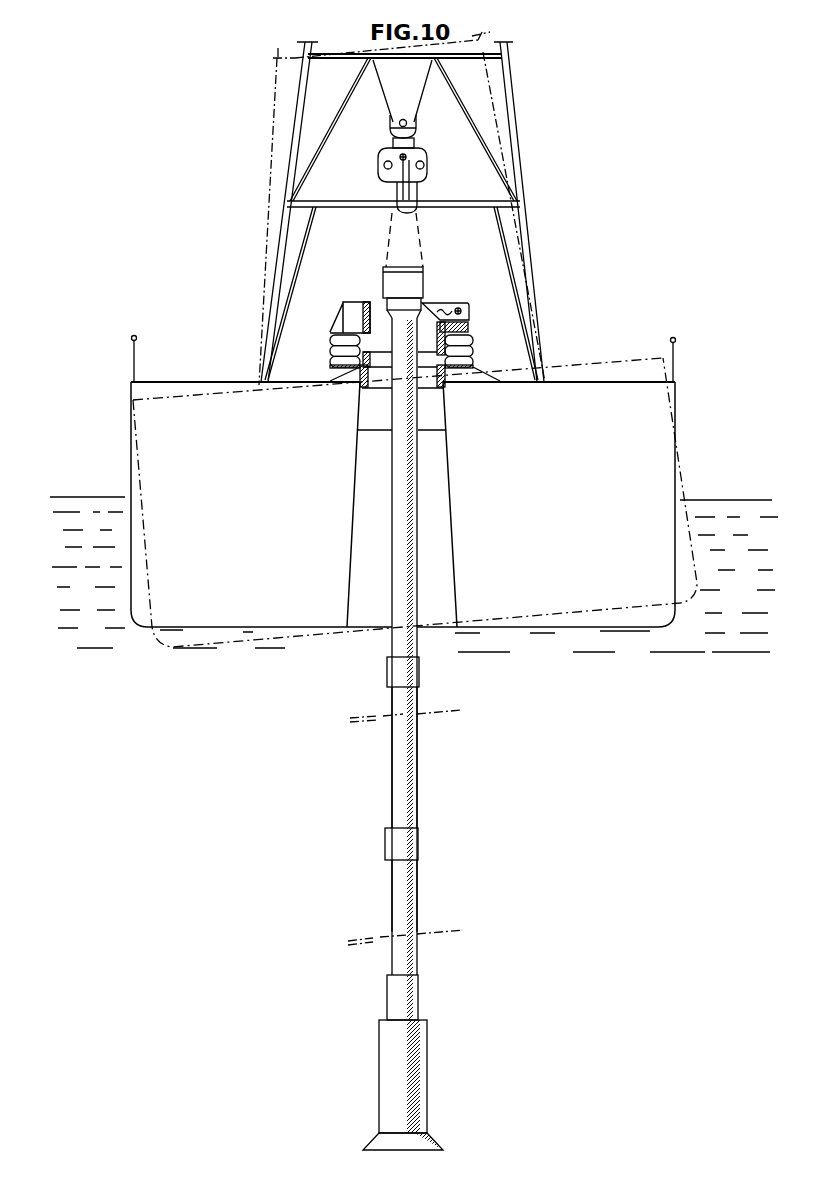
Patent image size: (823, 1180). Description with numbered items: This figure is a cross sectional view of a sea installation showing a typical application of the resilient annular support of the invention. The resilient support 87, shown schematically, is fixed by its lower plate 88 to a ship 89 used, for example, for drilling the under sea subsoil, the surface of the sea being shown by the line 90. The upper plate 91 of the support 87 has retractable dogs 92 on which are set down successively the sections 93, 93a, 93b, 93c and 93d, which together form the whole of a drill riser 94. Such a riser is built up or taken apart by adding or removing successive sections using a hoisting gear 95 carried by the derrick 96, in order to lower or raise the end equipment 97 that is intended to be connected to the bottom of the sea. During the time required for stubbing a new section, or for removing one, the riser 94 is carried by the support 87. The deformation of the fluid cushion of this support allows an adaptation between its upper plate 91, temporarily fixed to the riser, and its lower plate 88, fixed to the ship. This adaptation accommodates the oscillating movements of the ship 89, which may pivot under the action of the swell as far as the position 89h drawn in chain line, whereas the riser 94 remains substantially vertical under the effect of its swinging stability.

The resilient support 87 is at (477, 348).
The lower plate 88 is at (470, 370).
The ship 89 is at (655, 450).
The position of the ship 89h is at (687, 467).
The line showing the surface of the sea 90 is at (73, 497).
The upper plate 91 is at (478, 333).
The retractable dogs 92 is at (447, 302).
The section 93 is at (408, 962).
The section 93a is at (407, 897).
The section 93b is at (403, 787).
The section 93c is at (402, 700).
The section 93d is at (403, 640).
The drill riser 94 is at (418, 843).
The hoisting gear 95 is at (427, 163).
The derrick 96 is at (517, 57).
The end equipment 97 is at (413, 1075).